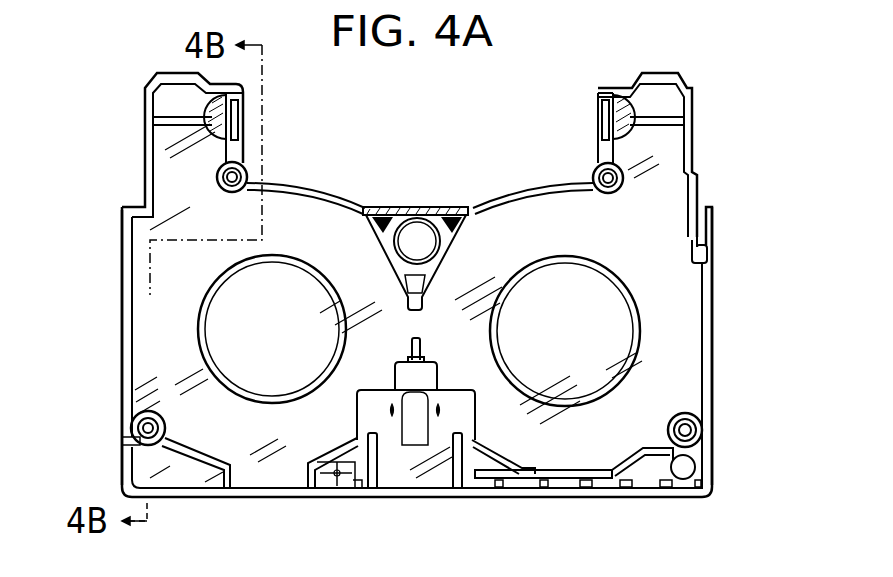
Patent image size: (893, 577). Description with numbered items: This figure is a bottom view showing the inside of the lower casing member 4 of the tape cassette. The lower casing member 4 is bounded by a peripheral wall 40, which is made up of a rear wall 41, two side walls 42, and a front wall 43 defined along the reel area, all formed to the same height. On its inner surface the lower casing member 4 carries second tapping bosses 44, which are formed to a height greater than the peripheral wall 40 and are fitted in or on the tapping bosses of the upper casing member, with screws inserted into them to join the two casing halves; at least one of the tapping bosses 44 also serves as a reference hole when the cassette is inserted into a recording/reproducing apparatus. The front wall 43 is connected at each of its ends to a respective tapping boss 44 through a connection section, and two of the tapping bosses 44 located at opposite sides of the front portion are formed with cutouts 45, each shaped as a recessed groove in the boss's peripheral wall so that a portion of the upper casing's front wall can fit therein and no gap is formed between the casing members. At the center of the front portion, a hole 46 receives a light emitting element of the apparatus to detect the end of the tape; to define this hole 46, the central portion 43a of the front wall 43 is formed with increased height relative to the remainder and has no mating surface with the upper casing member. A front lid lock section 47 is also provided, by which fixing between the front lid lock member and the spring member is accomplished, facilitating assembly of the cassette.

The lower casing member 4 is at (100, 307).
The peripheral wall 40 is at (563, 498).
The rear wall 41 is at (418, 491).
The side wall 42 is at (122, 242).
The front wall 43 is at (311, 186).
The central portion 43a is at (385, 207).
The second tapping boss 44 is at (220, 180).
The cutout 45 is at (249, 186).
The hole 46 is at (420, 232).
The front lid lock section 47 is at (700, 215).